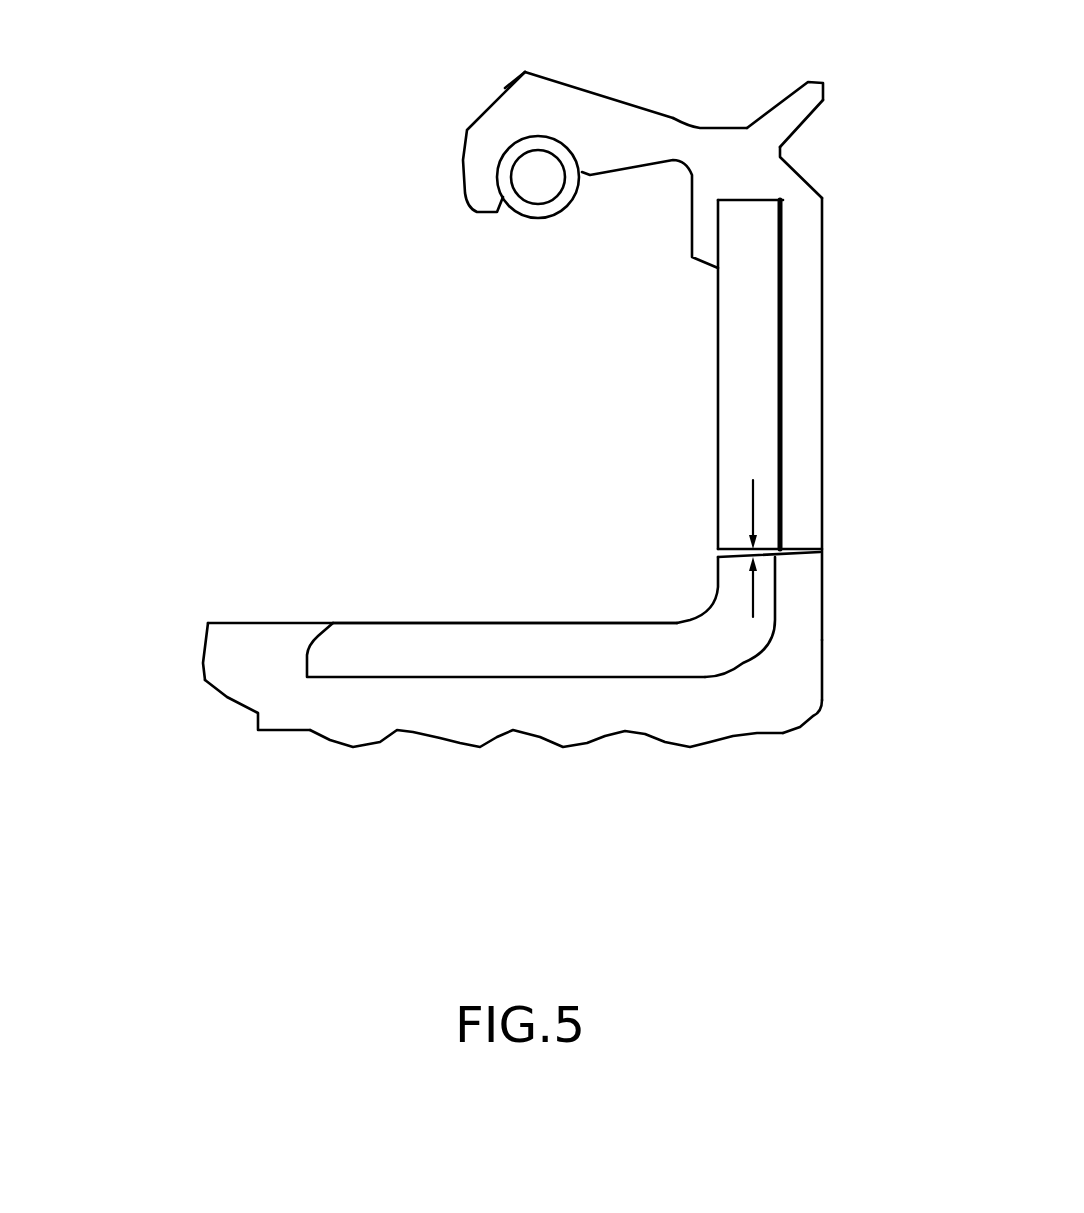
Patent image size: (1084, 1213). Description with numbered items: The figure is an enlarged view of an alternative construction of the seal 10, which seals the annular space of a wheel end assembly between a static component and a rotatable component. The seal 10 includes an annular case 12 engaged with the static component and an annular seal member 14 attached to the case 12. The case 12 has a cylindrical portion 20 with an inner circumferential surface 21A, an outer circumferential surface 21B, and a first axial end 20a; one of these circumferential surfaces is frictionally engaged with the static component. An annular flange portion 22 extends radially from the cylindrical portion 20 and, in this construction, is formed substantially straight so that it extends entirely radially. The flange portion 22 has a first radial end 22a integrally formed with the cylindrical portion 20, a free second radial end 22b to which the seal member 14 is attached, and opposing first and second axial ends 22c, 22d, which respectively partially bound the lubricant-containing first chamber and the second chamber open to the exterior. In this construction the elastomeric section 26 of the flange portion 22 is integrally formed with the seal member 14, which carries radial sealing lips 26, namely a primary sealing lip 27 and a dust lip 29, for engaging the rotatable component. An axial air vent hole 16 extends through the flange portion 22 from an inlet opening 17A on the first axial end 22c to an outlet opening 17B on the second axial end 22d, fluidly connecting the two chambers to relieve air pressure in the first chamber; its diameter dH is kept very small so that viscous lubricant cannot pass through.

The seal 10 is at (276, 243).
The annular case 12 is at (609, 387).
The annular seal member 14 is at (398, 113).
The axial air vent hole 16 is at (671, 545).
The inlet opening 17A is at (717, 552).
The outlet opening 17B is at (820, 552).
The cylindrical portion 20 is at (665, 776).
The first axial end 20a is at (205, 643).
The inner circumferential surface 21A is at (480, 747).
The outer circumferential surface 21B is at (482, 627).
The annular flange portion 22 is at (687, 407).
The first radial end 22a is at (767, 608).
The second free radial end 22b is at (743, 200).
The first axial end 22c is at (717, 308).
The second axial end 22d is at (822, 372).
The radial sealing lip 26 is at (592, 70).
The primary sealing lip 27 is at (528, 83).
The dust lip 29 is at (810, 83).
The diameter of the air vent hole dH is at (753, 480).